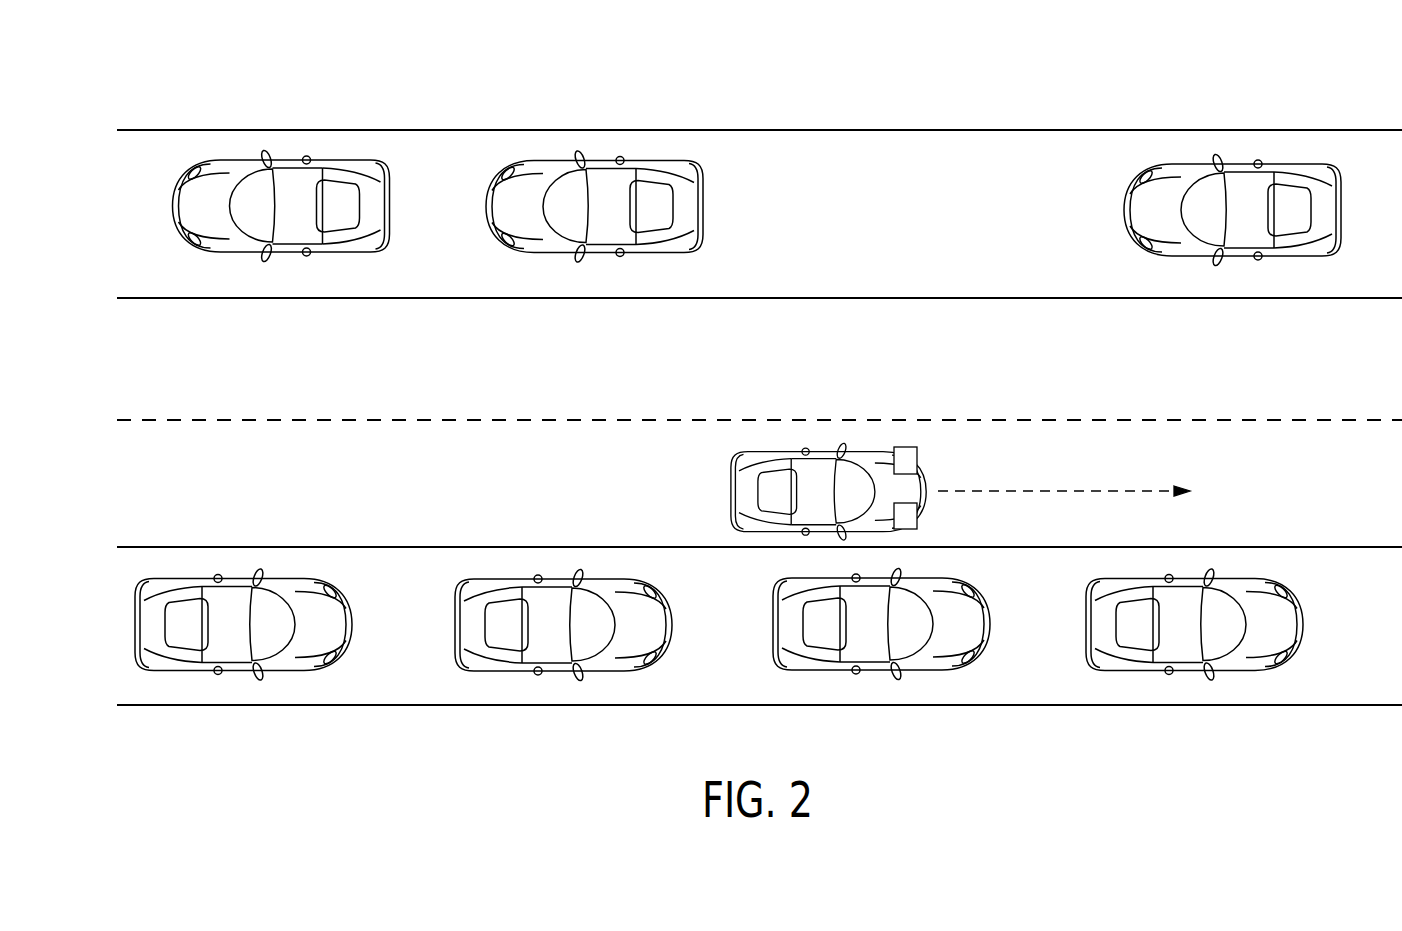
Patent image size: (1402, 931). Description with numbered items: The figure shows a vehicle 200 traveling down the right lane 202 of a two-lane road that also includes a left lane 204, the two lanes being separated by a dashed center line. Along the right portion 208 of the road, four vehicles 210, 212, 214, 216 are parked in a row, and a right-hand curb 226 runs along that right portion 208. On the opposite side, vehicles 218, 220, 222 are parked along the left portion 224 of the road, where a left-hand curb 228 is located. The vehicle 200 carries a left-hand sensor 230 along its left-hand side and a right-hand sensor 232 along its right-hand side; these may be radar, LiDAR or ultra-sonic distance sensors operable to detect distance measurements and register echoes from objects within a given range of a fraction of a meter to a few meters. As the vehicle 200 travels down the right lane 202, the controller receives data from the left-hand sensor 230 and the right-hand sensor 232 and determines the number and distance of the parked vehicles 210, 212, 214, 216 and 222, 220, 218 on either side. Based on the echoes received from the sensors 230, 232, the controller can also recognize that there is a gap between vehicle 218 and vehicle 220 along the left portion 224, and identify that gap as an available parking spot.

The vehicle 200 is at (825, 450).
The right lane 202 is at (394, 514).
The left lane 204 is at (556, 391).
The right portion 208 is at (185, 688).
The vehicle 210 is at (355, 606).
The vehicle 212 is at (675, 606).
The vehicle 214 is at (992, 606).
The vehicle 216 is at (1307, 606).
The vehicle 218 is at (1120, 207).
The vehicle 220 is at (703, 186).
The vehicle 222 is at (392, 186).
The left portion 224 is at (183, 121).
The right-hand curb 226 is at (974, 707).
The left-hand curb 228 is at (1008, 130).
The left-hand sensor 230 is at (910, 465).
The right-hand sensor 232 is at (910, 512).